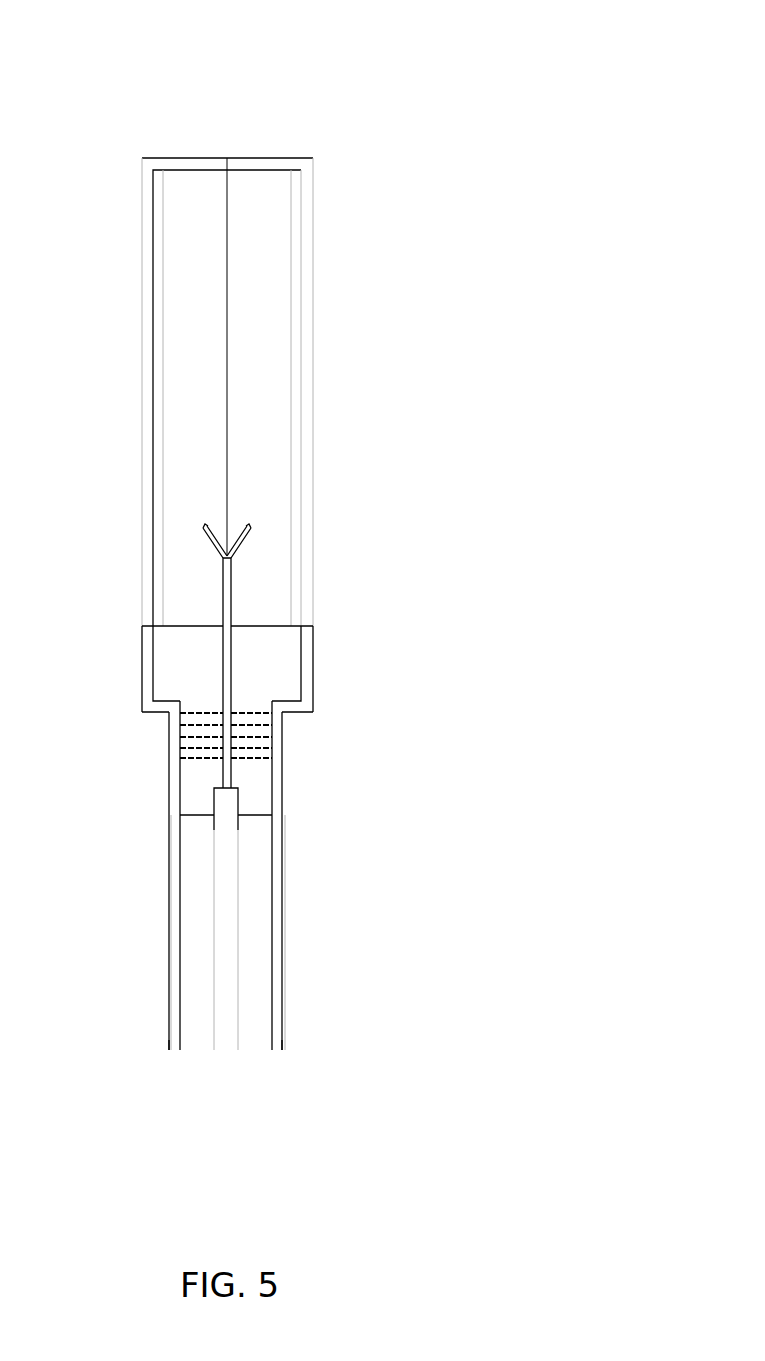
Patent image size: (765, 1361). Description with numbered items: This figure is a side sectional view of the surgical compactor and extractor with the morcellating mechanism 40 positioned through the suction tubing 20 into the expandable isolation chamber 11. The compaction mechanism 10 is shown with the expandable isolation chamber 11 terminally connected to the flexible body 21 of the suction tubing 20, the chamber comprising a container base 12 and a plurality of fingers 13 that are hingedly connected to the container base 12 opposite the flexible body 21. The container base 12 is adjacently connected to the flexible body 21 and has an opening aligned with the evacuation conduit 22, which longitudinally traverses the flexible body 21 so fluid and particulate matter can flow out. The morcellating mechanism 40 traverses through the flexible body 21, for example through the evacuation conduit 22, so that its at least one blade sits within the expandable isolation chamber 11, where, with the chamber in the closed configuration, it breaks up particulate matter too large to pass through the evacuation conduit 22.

The compaction mechanism 10 is at (553, 453).
The expandable isolation chamber 11 is at (233, 55).
The container base 12 is at (143, 647).
The plurality of fingers 13 is at (143, 315).
The suction tubing 20 is at (465, 898).
The flexible body 21 is at (280, 852).
The evacuation conduit 22 is at (253, 1038).
The morcellating mechanism 40 is at (220, 911).